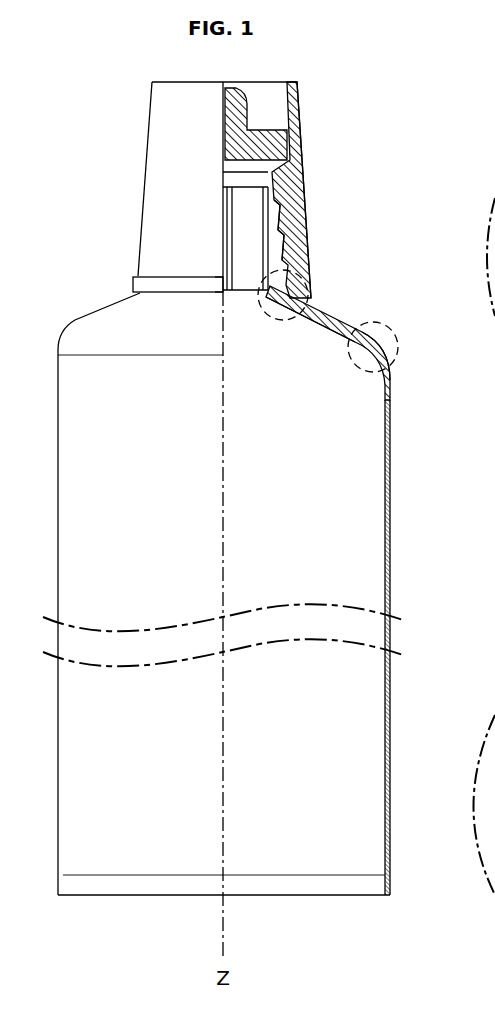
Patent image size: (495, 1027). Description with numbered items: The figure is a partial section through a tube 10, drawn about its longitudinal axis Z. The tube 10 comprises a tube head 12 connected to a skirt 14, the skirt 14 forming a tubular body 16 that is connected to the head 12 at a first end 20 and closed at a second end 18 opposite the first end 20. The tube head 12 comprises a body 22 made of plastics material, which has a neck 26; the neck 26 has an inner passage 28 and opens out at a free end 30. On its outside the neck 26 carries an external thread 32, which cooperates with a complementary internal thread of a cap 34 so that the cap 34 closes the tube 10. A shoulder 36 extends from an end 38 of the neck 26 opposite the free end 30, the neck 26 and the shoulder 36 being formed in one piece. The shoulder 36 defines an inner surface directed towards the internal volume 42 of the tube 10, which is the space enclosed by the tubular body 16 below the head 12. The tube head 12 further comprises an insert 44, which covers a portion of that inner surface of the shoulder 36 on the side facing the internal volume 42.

The tube 10 is at (420, 397).
The tube head 12 is at (349, 290).
The skirt 14 is at (390, 460).
The tubular body 16 is at (390, 505).
The second end 18 is at (330, 897).
The first end 20 is at (393, 350).
The body 22 is at (297, 195).
The neck 26 is at (297, 225).
The inner passage 28 is at (249, 296).
The free end 30 is at (268, 163).
The external thread 32 is at (298, 257).
The cap 34 is at (143, 170).
The shoulder 36 is at (348, 310).
The end of the neck 38 is at (303, 278).
The internal volume 42 is at (290, 494).
The insert 44 is at (316, 321).